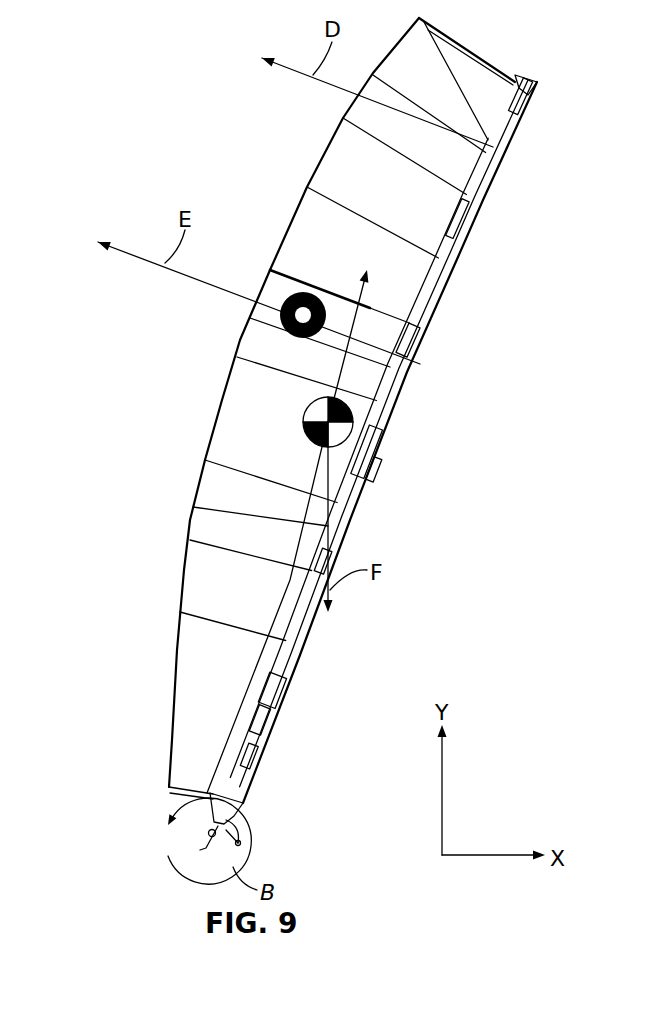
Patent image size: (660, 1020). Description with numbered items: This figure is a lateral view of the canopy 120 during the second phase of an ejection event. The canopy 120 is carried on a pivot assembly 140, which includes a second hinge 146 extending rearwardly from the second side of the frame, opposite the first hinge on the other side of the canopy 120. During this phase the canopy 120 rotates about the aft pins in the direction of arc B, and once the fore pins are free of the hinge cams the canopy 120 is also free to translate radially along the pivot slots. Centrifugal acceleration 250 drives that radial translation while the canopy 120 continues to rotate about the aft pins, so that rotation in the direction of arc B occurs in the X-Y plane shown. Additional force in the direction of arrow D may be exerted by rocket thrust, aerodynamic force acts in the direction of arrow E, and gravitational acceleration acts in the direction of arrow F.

The canopy 120 is at (165, 572).
The pivot assembly 140 is at (247, 838).
The second hinge 146 is at (197, 840).
The centrifugal acceleration 250 is at (357, 323).